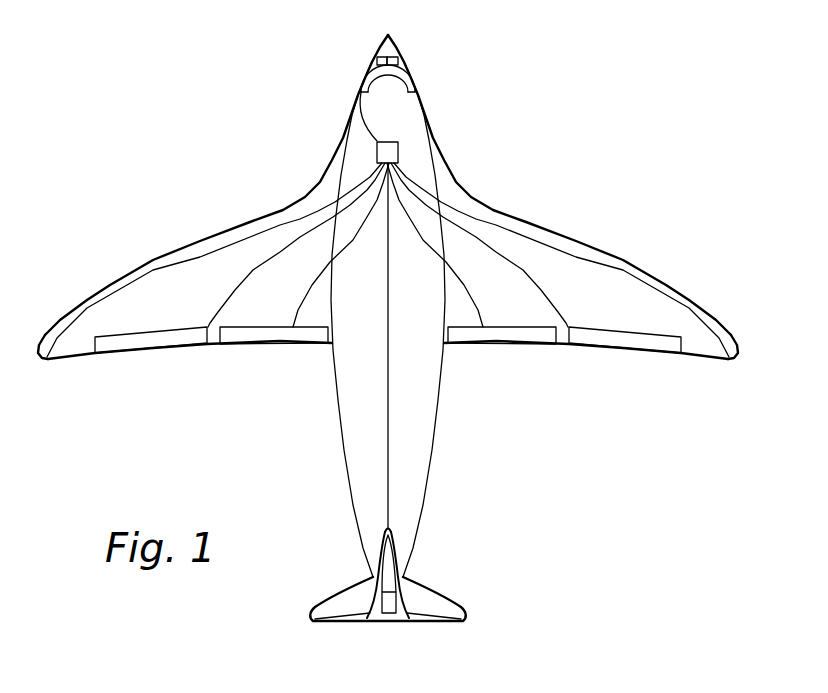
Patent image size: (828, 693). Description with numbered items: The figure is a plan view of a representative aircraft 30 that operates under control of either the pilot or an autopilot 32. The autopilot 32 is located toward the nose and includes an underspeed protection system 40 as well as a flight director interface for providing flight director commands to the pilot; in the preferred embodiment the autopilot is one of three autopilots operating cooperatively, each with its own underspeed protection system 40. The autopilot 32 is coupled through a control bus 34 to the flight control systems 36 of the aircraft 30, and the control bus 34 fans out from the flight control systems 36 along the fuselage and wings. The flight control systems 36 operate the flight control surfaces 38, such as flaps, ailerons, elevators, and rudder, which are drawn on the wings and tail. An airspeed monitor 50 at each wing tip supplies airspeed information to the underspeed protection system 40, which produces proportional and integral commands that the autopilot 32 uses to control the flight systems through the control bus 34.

The aircraft 30 is at (252, 104).
The autopilot 32 is at (377, 59).
The control bus 34 is at (377, 162).
The flight control systems 36 is at (398, 155).
The flight control surfaces 38 is at (142, 341).
The underspeed protection system 40 is at (390, 57).
The airspeed monitor 50 is at (45, 360).